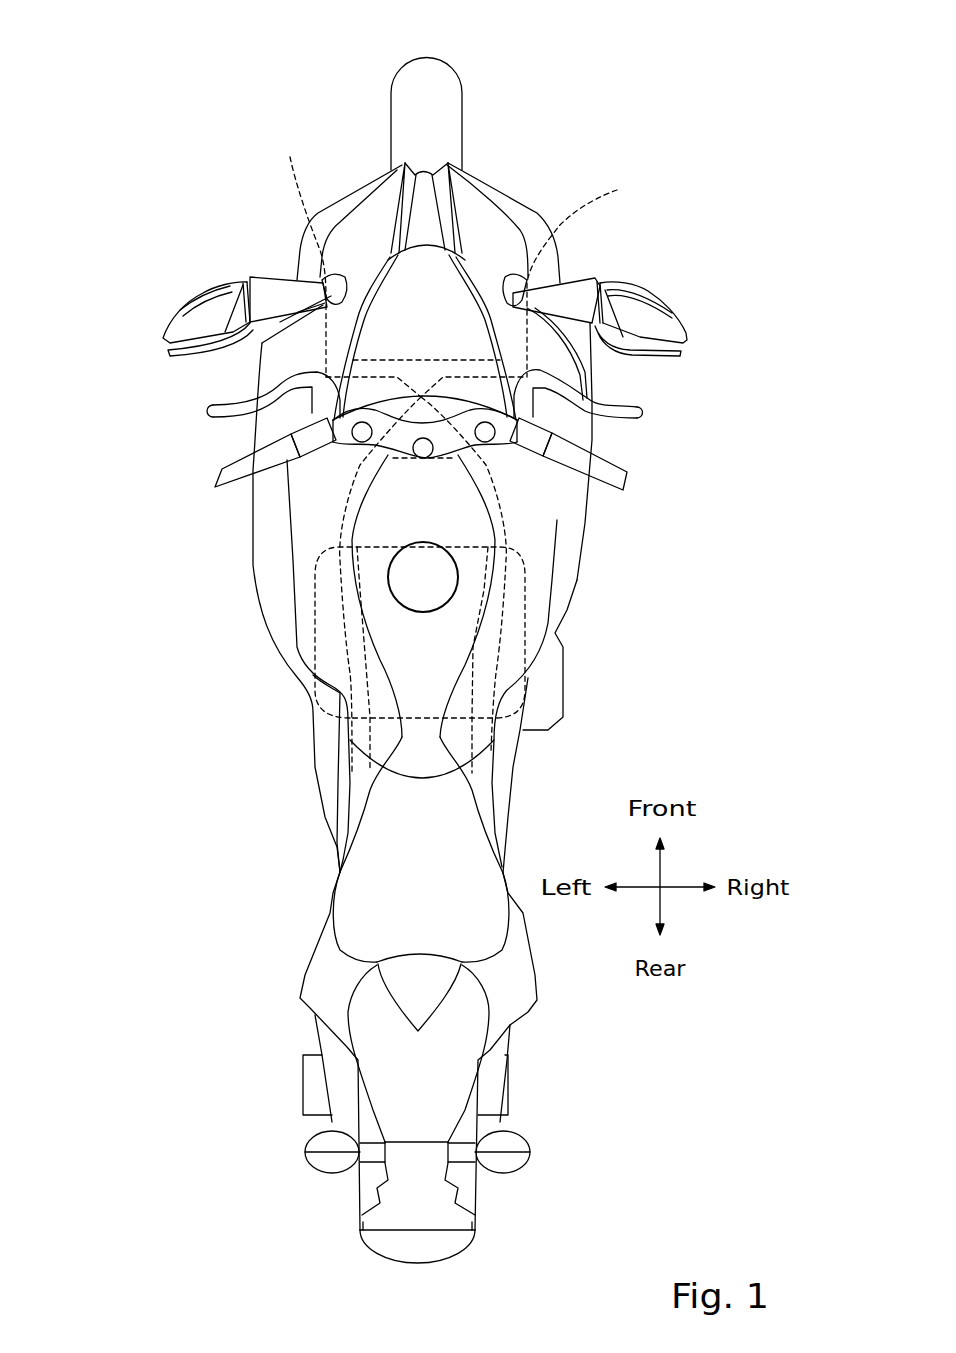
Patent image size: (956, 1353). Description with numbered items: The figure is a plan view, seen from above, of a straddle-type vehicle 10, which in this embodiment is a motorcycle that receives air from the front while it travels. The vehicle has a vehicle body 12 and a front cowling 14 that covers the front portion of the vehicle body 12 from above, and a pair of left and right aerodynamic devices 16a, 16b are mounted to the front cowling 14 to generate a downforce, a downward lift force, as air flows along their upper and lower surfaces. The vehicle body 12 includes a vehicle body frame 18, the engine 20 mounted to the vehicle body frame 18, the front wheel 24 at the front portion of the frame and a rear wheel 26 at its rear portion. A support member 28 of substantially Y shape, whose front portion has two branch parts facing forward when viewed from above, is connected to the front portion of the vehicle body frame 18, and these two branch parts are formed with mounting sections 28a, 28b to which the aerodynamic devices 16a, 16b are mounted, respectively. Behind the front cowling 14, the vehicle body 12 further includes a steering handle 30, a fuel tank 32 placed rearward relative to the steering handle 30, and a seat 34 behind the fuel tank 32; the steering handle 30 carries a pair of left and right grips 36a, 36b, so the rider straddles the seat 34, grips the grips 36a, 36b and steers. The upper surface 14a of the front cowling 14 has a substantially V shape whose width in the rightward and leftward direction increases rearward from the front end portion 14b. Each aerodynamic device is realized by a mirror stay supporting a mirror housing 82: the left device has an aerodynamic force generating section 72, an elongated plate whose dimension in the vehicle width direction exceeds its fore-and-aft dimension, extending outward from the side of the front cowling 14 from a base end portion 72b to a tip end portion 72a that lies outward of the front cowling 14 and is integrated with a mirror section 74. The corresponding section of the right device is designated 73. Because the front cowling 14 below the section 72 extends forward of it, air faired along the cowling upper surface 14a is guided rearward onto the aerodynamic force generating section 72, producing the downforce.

The straddle-type vehicle 10 is at (289, 89).
The vehicle body 12 is at (303, 527).
The front cowling 14 is at (517, 180).
The upper surface 14a is at (487, 257).
The front end portion 14b is at (425, 168).
The aerodynamic device 16a is at (185, 275).
The aerodynamic device 16b is at (656, 268).
The vehicle body frame 18 is at (510, 512).
The engine 20 is at (503, 640).
The front wheel 24 is at (424, 90).
The rear wheel 26 is at (433, 1247).
The support member 28 is at (407, 357).
The mounting section 28a is at (298, 255).
The mounting section 28b is at (591, 276).
The steering handle 30 is at (334, 453).
The fuel tank 32 is at (386, 622).
The seat 34 is at (387, 862).
The grip 36a is at (225, 472).
The grip 36b is at (617, 470).
The aerodynamic force generating section 72 is at (273, 292).
The tip end portion 72a is at (318, 316).
The base end portion 72b is at (322, 285).
The aerodynamic force generating section 73 is at (572, 297).
The mirror section 74 is at (167, 332).
The mirror housing 82 is at (193, 320).